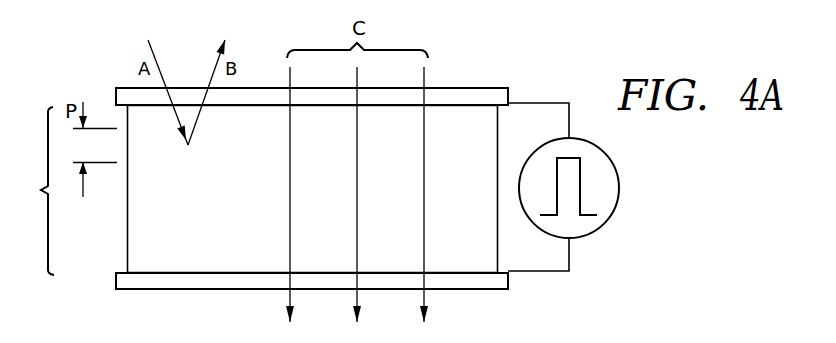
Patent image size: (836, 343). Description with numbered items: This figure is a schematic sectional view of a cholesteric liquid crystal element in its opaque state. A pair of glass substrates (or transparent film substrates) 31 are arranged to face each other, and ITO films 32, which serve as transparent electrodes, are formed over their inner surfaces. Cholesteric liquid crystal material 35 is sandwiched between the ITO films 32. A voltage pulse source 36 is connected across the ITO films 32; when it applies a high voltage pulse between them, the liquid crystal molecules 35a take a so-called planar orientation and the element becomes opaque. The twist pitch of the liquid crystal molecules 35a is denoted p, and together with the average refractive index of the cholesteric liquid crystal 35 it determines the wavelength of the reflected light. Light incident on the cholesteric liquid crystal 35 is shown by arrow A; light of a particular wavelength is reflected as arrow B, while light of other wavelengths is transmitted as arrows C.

The glass substrate 31 is at (467, 93).
The ITO film 32 is at (450, 106).
The cholesteric liquid crystal material 35 is at (30, 191).
The liquid crystal molecules 35a is at (231, 247).
The voltage pulse source 36 is at (618, 195).